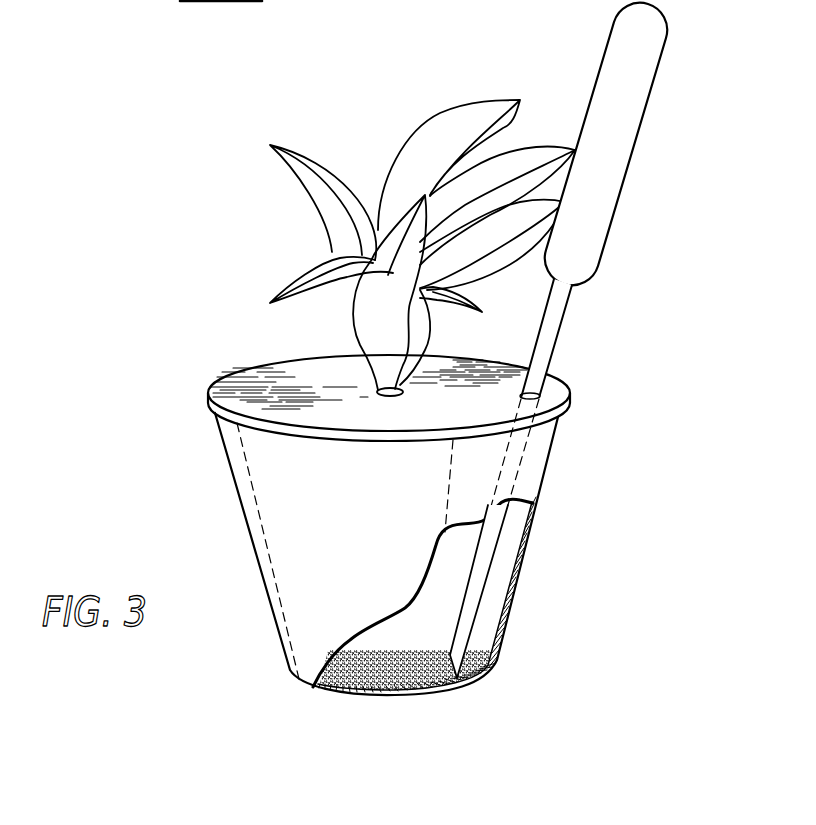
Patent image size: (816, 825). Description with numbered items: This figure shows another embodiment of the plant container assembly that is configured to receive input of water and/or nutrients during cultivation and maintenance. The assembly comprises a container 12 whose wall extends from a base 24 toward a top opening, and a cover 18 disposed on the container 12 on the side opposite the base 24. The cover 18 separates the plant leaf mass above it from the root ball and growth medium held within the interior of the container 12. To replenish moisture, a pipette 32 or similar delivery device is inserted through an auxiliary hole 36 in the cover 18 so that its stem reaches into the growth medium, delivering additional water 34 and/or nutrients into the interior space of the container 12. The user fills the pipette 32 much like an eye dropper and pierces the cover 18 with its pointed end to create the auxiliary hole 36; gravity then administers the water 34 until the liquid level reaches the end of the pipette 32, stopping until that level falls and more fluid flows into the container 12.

The container 12 is at (437, 539).
The cover 18 is at (238, 382).
The base 24 is at (229, 0).
The pipette 32 is at (617, 159).
The water 34 is at (383, 670).
The auxiliary hole 36 is at (549, 394).